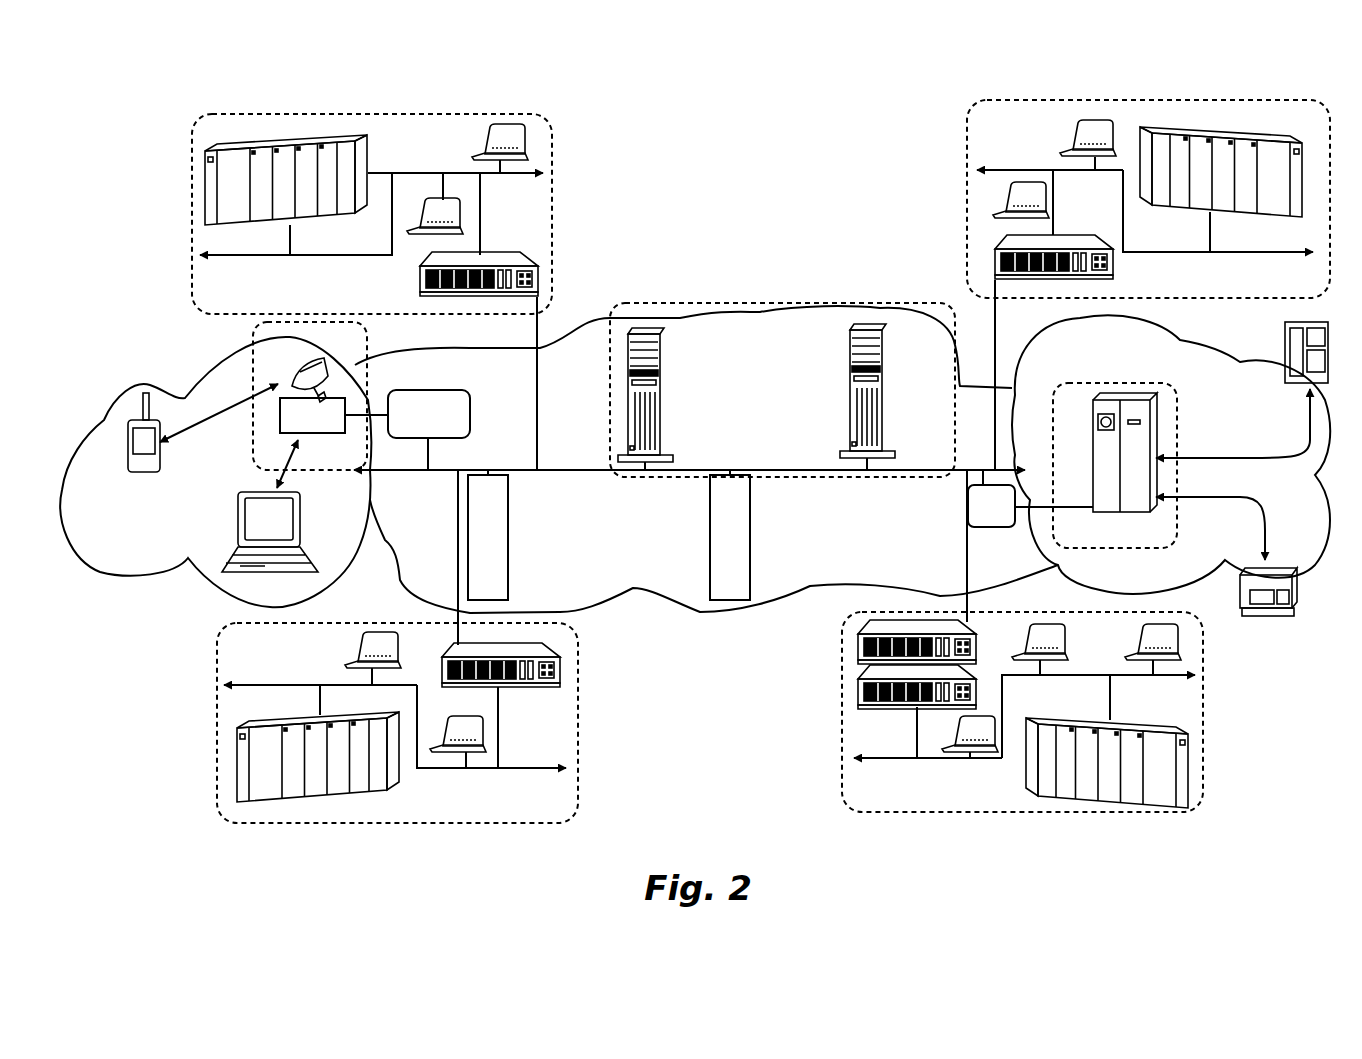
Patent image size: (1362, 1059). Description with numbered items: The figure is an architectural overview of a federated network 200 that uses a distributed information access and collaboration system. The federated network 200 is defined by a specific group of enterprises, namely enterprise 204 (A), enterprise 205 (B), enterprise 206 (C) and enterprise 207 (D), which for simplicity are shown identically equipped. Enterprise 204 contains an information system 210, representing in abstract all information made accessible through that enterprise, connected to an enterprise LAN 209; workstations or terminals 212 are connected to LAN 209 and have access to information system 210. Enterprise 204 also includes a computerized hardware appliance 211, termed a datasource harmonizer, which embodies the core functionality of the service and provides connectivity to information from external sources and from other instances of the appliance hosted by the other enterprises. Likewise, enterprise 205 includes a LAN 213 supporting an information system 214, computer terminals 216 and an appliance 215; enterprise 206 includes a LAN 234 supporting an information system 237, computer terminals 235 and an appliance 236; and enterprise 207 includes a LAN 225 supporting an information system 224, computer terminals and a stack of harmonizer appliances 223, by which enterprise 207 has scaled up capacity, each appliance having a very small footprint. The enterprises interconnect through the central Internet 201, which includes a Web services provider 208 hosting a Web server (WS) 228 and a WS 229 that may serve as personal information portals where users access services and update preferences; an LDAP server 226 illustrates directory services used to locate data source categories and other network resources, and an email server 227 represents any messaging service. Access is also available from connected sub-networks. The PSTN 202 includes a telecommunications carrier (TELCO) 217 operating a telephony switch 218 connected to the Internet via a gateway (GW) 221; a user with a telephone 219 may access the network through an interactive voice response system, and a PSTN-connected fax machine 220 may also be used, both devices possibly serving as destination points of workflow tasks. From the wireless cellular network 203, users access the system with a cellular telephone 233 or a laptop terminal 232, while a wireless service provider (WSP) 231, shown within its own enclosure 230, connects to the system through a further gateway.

The federated network 200 is at (724, 146).
The internet network cloud 201 is at (712, 627).
The PSTN 202 is at (1235, 358).
The wireless cellular network 203 is at (192, 577).
The enterprise (A) 204 is at (376, 110).
The enterprise (B) 205 is at (961, 192).
The enterprise (C) 206 is at (213, 745).
The enterprise (D) 207 is at (1212, 710).
The Web services provider 208 is at (785, 293).
The enterprise LAN 209 is at (372, 254).
The information system 210 is at (368, 170).
The computerized hardware appliance 211 is at (495, 252).
The workstations or terminals 212 is at (460, 212).
The LAN 213 is at (1200, 251).
The information system 214 is at (1230, 128).
The appliance 215 is at (998, 262).
The computer terminals 216 is at (1078, 133).
The telecommunications carrier (TELCO) 217 is at (1181, 438).
The telephony switch 218 is at (1120, 393).
The telephone 219 is at (1286, 372).
The fax machine 220 is at (1295, 600).
The gateway (GW) 221 is at (983, 528).
The stack of harmonizer appliances 223 is at (878, 712).
The information system 224 is at (1112, 720).
The LAN 225 is at (1082, 678).
The LDAP server 226 is at (750, 550).
The email server 227 is at (508, 533).
The Web server (WS) 228 is at (672, 392).
The Web server (WS) 229 is at (895, 388).
The wireless service provider 230 is at (252, 332).
The wireless service provider (WSP) 231 is at (280, 418).
The laptop terminal 232 is at (310, 549).
The cellular telephone 233 is at (136, 474).
The LAN 234 is at (291, 687).
The computer terminals 235 is at (535, 690).
The appliance 236 is at (560, 675).
The information system 237 is at (237, 742).